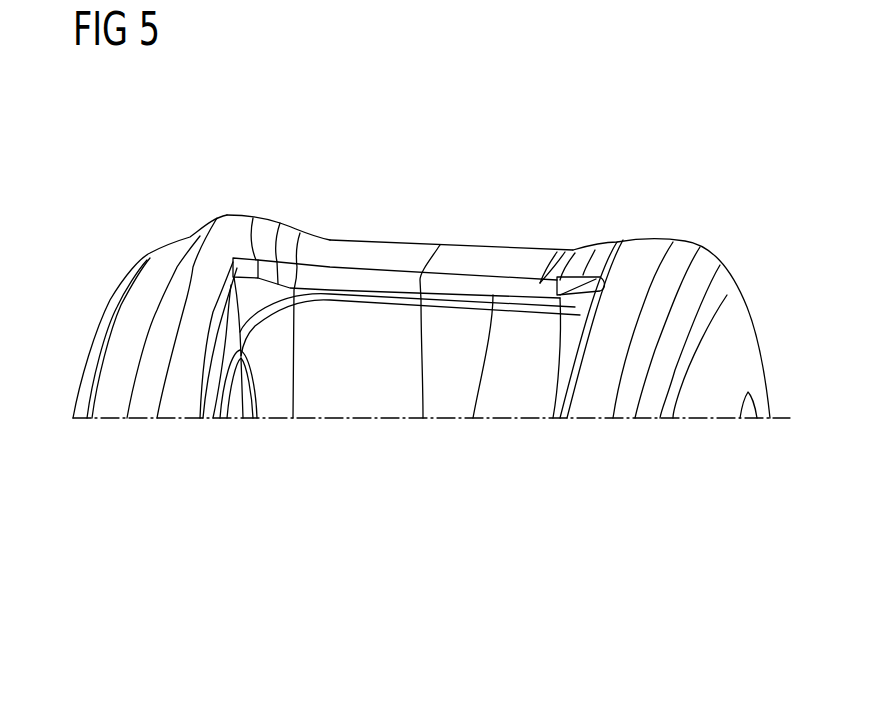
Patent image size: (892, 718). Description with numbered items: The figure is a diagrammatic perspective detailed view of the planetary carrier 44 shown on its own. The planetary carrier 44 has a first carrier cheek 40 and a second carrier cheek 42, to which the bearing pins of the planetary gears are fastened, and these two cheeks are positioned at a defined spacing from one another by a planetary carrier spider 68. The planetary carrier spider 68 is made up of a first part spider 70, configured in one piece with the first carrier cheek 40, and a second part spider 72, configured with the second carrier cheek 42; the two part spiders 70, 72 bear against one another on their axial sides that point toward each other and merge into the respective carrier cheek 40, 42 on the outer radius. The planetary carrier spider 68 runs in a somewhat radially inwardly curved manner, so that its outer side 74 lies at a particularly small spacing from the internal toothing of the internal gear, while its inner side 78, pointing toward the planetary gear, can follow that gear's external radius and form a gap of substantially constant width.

The first carrier cheek 40 is at (154, 268).
The second carrier cheek 42 is at (640, 250).
The planetary carrier 44 is at (237, 190).
The planetary carrier spider 68 is at (565, 163).
The first part spider 70 is at (407, 244).
The second part spider 72 is at (470, 256).
The outer side of the planetary carrier spider 74 is at (343, 258).
The inner side of the planetary carrier spider 78 is at (473, 418).